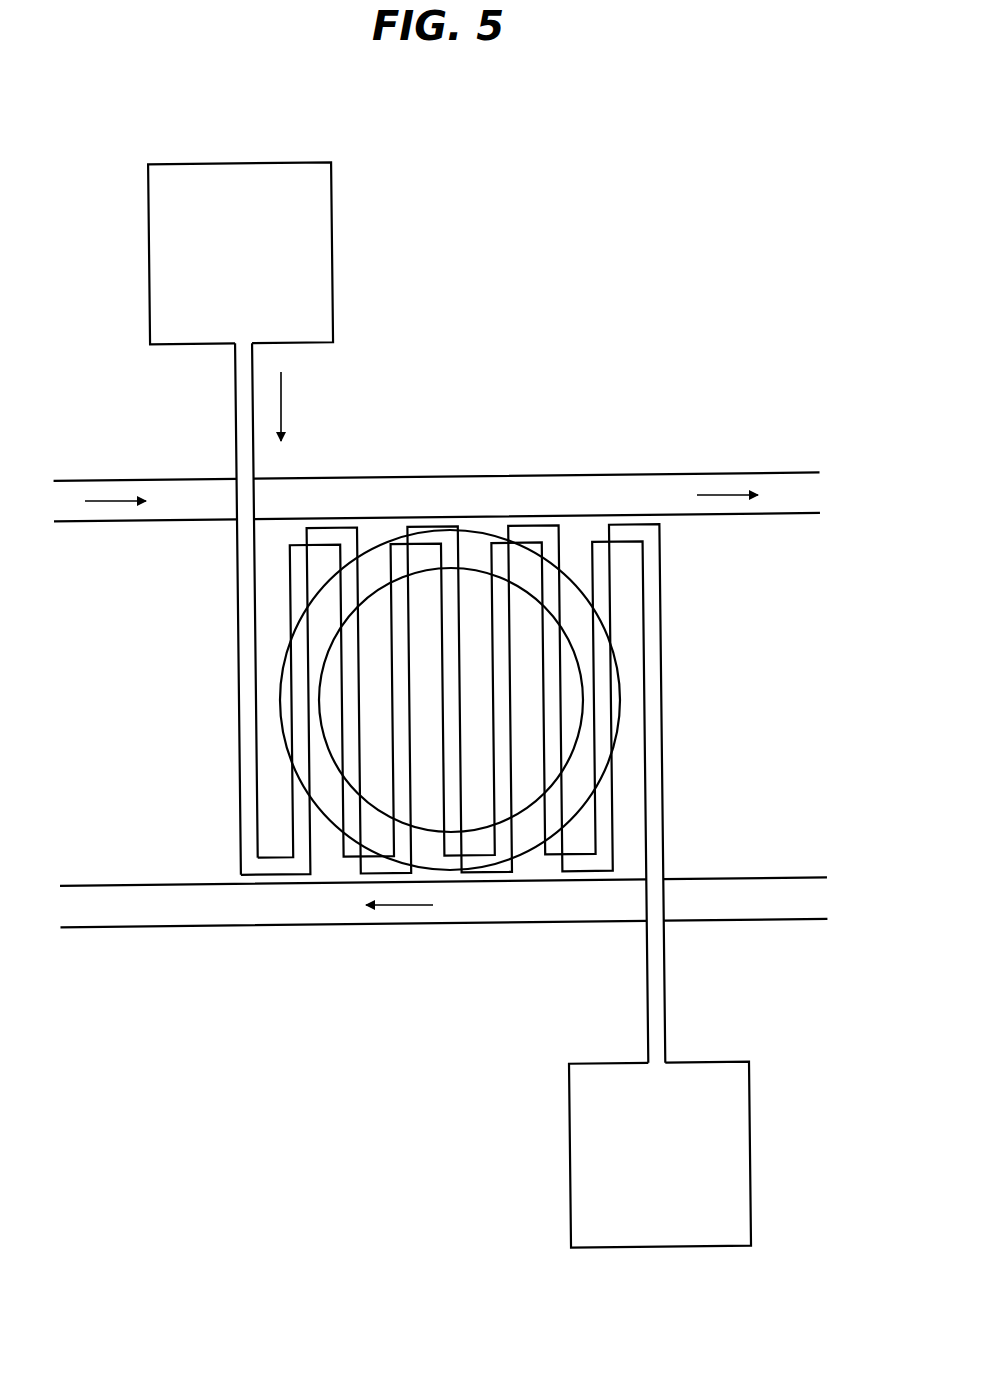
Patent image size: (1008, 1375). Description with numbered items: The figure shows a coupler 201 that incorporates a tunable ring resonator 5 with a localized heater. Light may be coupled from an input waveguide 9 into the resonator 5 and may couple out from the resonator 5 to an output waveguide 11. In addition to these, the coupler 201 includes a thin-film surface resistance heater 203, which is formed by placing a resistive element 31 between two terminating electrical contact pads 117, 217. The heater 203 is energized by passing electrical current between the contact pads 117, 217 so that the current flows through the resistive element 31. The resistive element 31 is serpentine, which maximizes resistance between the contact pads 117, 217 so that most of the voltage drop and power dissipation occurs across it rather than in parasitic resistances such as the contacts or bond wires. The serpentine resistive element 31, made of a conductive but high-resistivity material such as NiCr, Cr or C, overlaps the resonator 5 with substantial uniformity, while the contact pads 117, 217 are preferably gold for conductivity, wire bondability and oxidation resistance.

The contact pad 117 is at (333, 263).
The contact pad 217 is at (570, 1190).
The input waveguide 9 is at (467, 497).
The output waveguide 11 is at (212, 906).
The serpentine resistive element 31 is at (225, 706).
The thin-film surface resistance heater 203 is at (686, 602).
The tunable ring resonator 5 is at (579, 781).
The coupler 201 is at (400, 979).